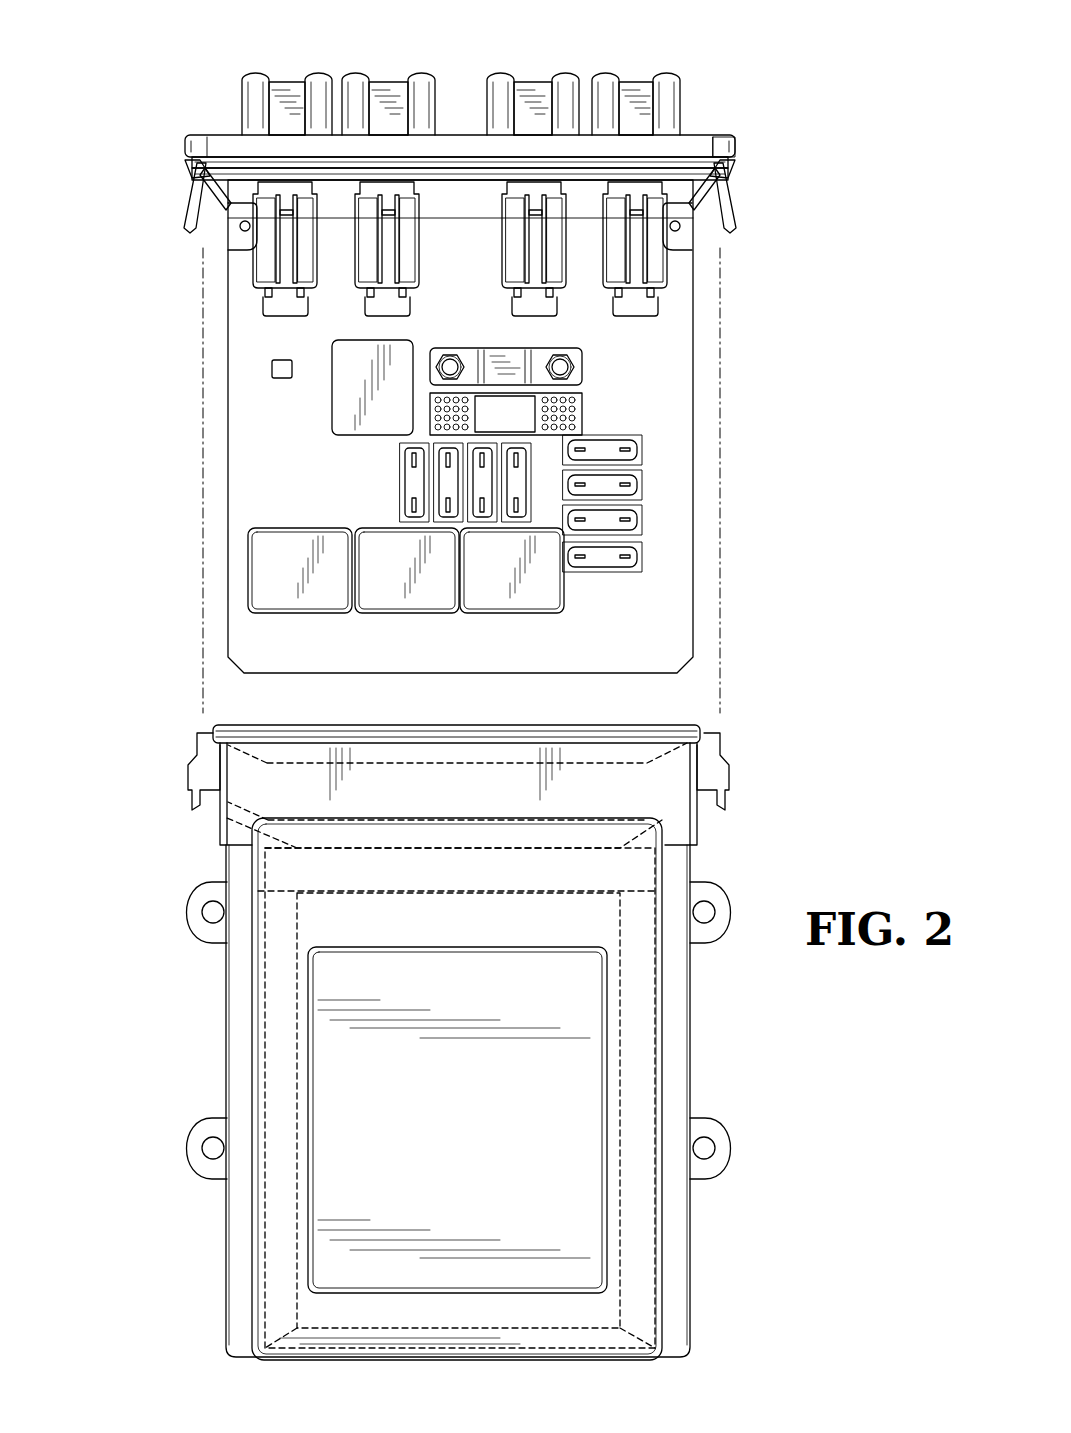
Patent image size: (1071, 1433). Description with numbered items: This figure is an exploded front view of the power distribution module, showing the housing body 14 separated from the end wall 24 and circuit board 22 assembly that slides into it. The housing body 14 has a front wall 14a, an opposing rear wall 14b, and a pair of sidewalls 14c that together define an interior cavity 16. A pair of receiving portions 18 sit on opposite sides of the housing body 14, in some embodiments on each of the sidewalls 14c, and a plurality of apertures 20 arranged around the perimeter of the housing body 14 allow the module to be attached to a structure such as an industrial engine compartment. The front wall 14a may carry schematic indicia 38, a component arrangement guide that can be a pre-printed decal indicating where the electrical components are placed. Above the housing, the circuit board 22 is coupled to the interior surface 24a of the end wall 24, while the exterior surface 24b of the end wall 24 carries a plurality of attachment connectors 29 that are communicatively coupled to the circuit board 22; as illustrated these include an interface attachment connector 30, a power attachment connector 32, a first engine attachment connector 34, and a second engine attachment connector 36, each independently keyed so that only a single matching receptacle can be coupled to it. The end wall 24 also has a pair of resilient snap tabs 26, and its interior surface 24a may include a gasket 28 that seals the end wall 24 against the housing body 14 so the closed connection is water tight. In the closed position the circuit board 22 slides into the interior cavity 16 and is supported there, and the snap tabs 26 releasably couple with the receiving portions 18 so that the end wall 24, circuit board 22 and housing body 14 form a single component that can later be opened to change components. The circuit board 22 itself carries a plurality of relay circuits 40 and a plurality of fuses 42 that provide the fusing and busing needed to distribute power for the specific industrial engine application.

The housing body 14 is at (82, 816).
The front wall 14a is at (448, 936).
The rear wall 14b is at (688, 1053).
The sidewalls 14c is at (222, 826).
The interior cavity 16 is at (440, 752).
The receiving portions 18 is at (202, 778).
The apertures 20 is at (207, 943).
The circuit board 22 is at (668, 401).
The end wall 24 is at (116, 122).
The interior surface 24a is at (186, 176).
The exterior surface 24b is at (214, 137).
The snap tabs 26 is at (198, 236).
The gasket 28 is at (703, 158).
The attachment connectors 29 is at (642, 13).
The interface attachment connector 30 is at (648, 88).
The power attachment connector 32 is at (545, 85).
The first engine attachment connector 34 is at (382, 85).
The second engine attachment connector 36 is at (296, 85).
The schematic indicia 38 is at (575, 1232).
The relay circuits 40 is at (181, 571).
The fuses 42 is at (683, 536).